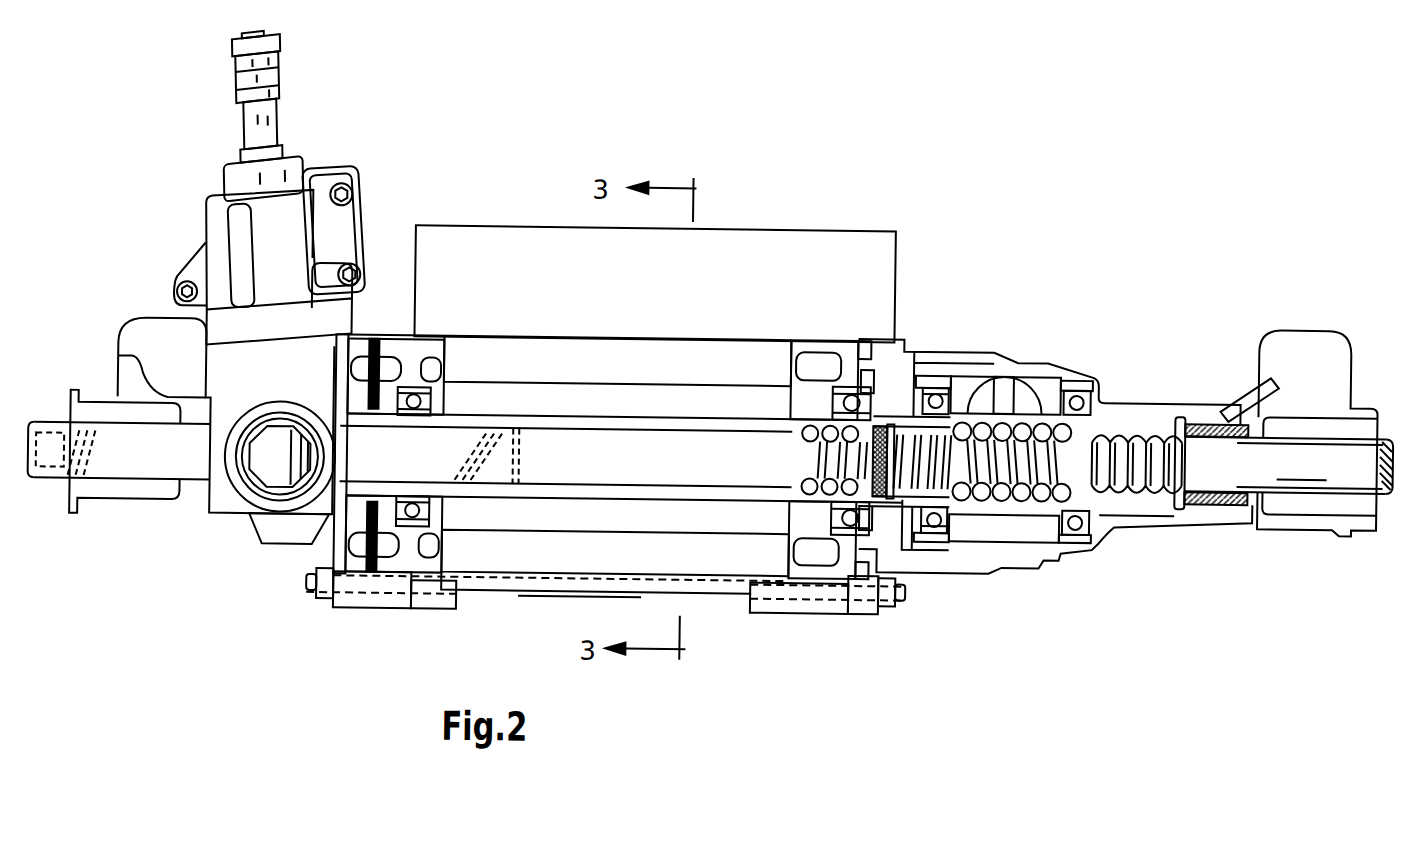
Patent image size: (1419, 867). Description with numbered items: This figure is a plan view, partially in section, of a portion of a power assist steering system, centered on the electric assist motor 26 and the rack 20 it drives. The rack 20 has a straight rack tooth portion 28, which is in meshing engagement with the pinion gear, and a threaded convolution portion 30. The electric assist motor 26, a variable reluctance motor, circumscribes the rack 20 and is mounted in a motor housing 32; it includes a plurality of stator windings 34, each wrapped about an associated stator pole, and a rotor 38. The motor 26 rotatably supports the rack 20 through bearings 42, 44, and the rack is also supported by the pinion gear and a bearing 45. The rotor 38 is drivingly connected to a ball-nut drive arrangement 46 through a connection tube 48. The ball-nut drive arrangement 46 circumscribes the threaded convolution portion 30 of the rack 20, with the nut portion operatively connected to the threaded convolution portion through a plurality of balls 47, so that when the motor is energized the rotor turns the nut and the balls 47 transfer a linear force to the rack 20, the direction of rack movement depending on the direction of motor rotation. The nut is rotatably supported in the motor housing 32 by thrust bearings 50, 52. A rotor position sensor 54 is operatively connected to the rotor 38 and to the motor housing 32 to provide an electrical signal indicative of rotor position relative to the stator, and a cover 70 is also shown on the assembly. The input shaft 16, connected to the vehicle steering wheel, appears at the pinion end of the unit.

The input shaft 16 is at (265, 136).
The rack 20 is at (1257, 453).
The electric assist motor 26 is at (751, 334).
The straight rack tooth portion 28 is at (130, 475).
The threaded convolution portion 30 is at (1140, 430).
The motor housing 32 is at (731, 602).
The stator windings 34 is at (808, 552).
The rotor 38 is at (527, 518).
The bearing 42 is at (416, 388).
The bearing 44 is at (891, 408).
The bearing 45 is at (1206, 500).
The ball-nut drive arrangement 46 is at (1030, 506).
The balls 47 is at (1012, 413).
The connection tube 48 is at (930, 386).
The thrust bearing 50 is at (958, 384).
The thrust bearing 52 is at (1105, 533).
The rotor position sensor 54 is at (350, 552).
The cover 70 is at (810, 227).